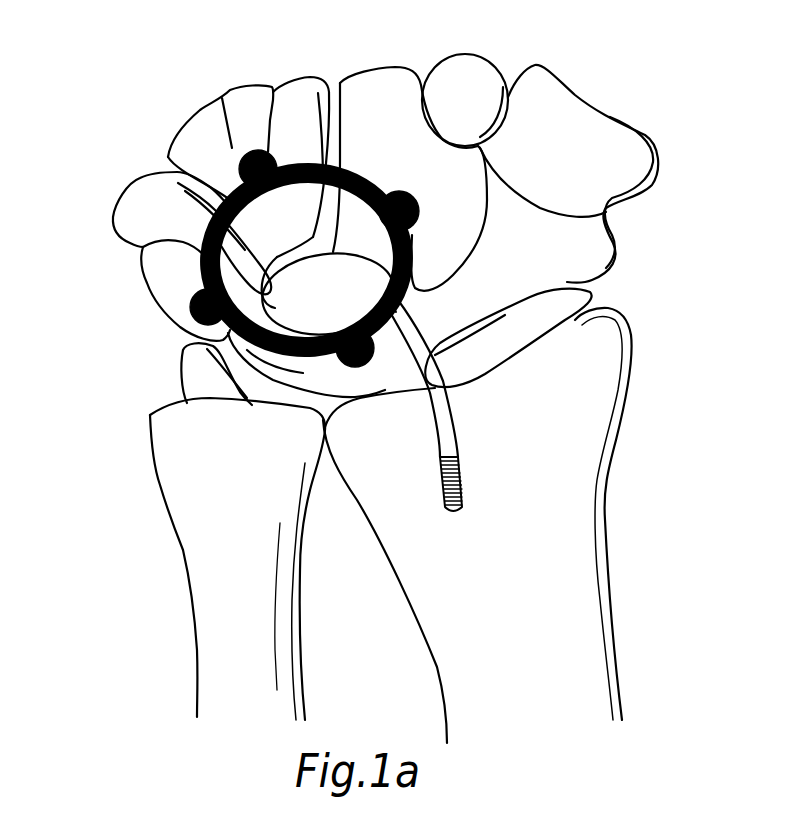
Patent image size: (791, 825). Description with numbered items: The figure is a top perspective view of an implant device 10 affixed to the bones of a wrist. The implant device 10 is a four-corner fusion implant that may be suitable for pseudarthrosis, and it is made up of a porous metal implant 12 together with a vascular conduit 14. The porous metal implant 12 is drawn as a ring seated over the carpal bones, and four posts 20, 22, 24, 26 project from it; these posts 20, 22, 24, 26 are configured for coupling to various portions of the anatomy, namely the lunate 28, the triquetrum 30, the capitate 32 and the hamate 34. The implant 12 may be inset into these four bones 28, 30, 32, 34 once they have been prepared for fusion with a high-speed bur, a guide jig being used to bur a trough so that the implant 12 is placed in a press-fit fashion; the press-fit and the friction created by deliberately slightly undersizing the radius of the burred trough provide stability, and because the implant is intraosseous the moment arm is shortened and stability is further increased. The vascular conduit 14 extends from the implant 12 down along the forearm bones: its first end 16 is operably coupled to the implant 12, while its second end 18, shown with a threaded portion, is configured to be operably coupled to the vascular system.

The implant device 10 is at (371, 298).
The porous metal implant 12 is at (200, 258).
The vascular conduit 14 is at (438, 407).
The first end 16 is at (397, 316).
The second end 18 is at (458, 455).
The post 20 is at (340, 362).
The post 22 is at (193, 303).
The post 24 is at (417, 203).
The post 26 is at (250, 153).
The lunate 28 is at (320, 387).
The triquetrum 30 is at (177, 312).
The capitate 32 is at (377, 147).
The hamate 34 is at (193, 155).